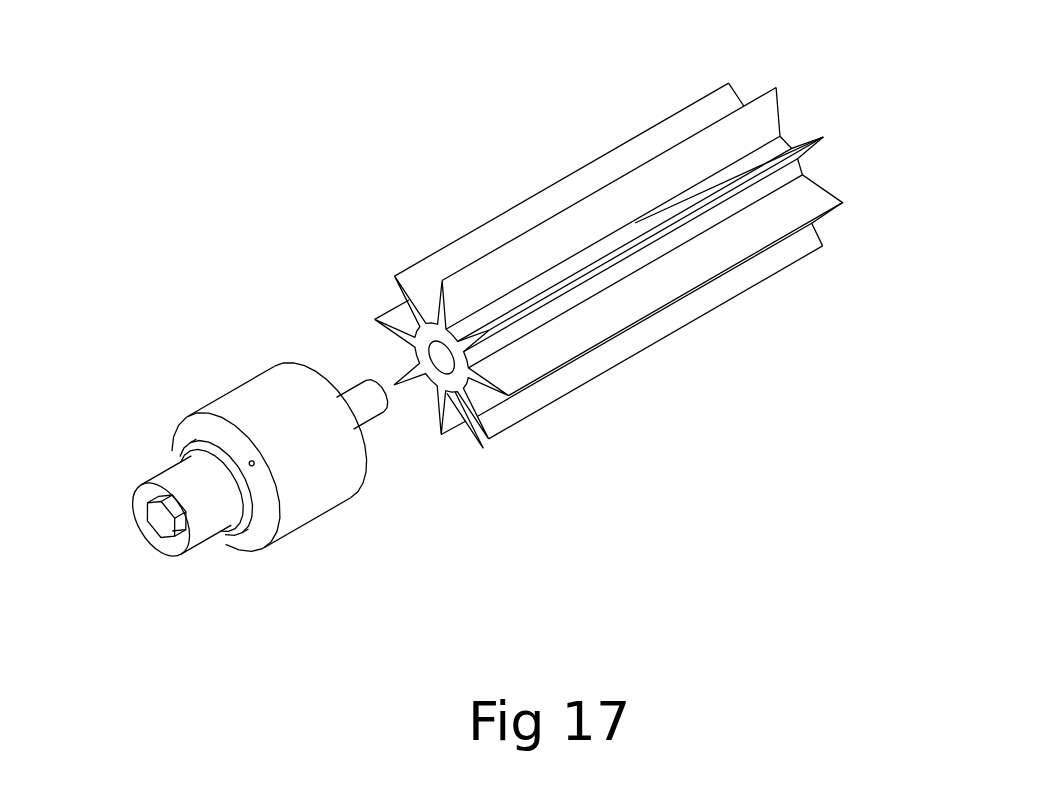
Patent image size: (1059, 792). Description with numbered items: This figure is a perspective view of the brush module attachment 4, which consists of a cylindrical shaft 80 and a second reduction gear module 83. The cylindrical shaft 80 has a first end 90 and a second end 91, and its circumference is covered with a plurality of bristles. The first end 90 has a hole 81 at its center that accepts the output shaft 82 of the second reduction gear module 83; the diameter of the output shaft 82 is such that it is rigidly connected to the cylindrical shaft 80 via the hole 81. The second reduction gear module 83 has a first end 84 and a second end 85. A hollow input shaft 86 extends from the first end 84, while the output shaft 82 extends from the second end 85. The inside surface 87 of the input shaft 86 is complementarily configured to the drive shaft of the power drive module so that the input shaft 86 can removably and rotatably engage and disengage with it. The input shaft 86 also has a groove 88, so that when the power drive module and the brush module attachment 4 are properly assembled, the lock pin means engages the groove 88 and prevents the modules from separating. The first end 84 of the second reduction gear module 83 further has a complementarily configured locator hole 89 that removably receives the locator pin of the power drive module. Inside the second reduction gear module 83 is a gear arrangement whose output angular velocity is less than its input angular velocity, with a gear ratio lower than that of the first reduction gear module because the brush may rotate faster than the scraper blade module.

The brush module attachment 4 is at (634, 301).
The cylindrical shaft 80 is at (650, 333).
The hole 81 is at (516, 407).
The output shaft 82 is at (397, 315).
The second reduction gear module 83 is at (269, 425).
The first end 84 is at (263, 517).
The second end 85 is at (384, 450).
The input shaft 86 is at (136, 496).
The inside surface 87 is at (109, 509).
The groove 88 is at (152, 430).
The locator hole 89 is at (322, 519).
The first end 90 is at (539, 487).
The second end 91 is at (668, 174).